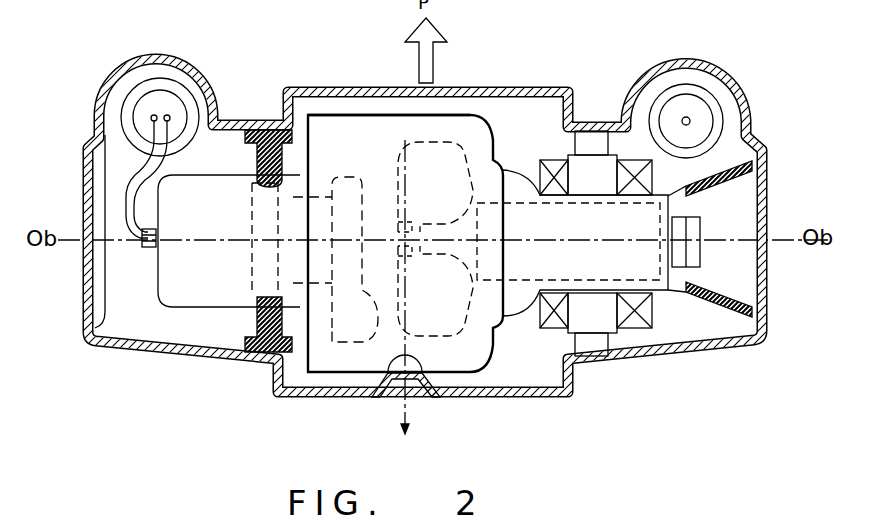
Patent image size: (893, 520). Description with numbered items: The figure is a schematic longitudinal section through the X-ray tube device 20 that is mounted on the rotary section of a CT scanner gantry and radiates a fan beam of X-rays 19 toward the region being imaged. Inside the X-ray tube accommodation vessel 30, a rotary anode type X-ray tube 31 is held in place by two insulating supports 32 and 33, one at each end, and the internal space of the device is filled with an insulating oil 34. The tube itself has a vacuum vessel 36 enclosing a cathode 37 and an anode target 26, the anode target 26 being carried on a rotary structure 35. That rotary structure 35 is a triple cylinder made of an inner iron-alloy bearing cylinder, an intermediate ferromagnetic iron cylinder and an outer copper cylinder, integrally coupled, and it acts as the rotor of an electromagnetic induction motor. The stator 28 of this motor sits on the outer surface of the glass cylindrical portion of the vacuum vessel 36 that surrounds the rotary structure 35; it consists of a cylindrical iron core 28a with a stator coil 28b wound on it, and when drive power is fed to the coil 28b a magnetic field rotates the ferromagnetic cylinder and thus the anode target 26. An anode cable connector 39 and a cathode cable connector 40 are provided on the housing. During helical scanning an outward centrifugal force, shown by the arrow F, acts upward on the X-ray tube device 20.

The fan beam of X-rays 19 is at (386, 397).
The X-ray tube device 20 is at (140, 350).
The anode target 26 is at (482, 337).
The stator 28 is at (620, 150).
The cylindrical iron core 28a is at (587, 322).
The stator coil 28b is at (648, 308).
The X-ray tube accommodation vessel 30 is at (285, 88).
The X-ray tube 31 is at (336, 113).
The insulating support 32 is at (750, 310).
The insulating support 33 is at (258, 316).
The insulating oil 34 is at (493, 367).
The rotary structure 35 is at (517, 198).
The vacuum vessel 36 is at (462, 115).
The cathode 37 is at (352, 377).
The anode cable connector 39 is at (702, 105).
The cathode cable connector 40 is at (180, 112).